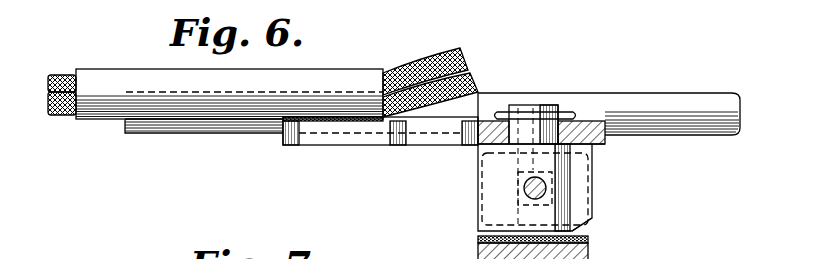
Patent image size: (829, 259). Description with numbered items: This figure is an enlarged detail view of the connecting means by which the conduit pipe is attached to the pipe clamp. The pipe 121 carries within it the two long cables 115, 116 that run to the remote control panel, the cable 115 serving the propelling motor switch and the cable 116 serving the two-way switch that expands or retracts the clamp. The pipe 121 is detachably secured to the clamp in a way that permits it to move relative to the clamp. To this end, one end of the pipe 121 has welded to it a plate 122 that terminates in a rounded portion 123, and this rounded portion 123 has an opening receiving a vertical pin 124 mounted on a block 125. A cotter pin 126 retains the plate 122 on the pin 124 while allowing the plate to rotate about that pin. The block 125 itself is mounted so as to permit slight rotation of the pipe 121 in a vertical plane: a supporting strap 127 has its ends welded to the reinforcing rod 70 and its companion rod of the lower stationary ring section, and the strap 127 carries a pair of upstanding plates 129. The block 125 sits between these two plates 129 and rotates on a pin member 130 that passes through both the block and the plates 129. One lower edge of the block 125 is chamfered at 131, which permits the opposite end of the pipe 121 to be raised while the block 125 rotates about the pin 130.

The reinforcing rod 70 is at (642, 103).
The cable 115 is at (476, 71).
The cable 116 is at (415, 72).
The pipe 121 is at (103, 80).
The plate 122 is at (370, 138).
The rounded portion 123 is at (605, 145).
The vertical pin 124 is at (531, 108).
The block 125 is at (572, 192).
The cotter pin 126 is at (497, 111).
The supporting strap 127 is at (590, 257).
The upstanding plates 129 is at (583, 231).
The pin member 130 is at (530, 188).
The chamfer 131 is at (588, 221).